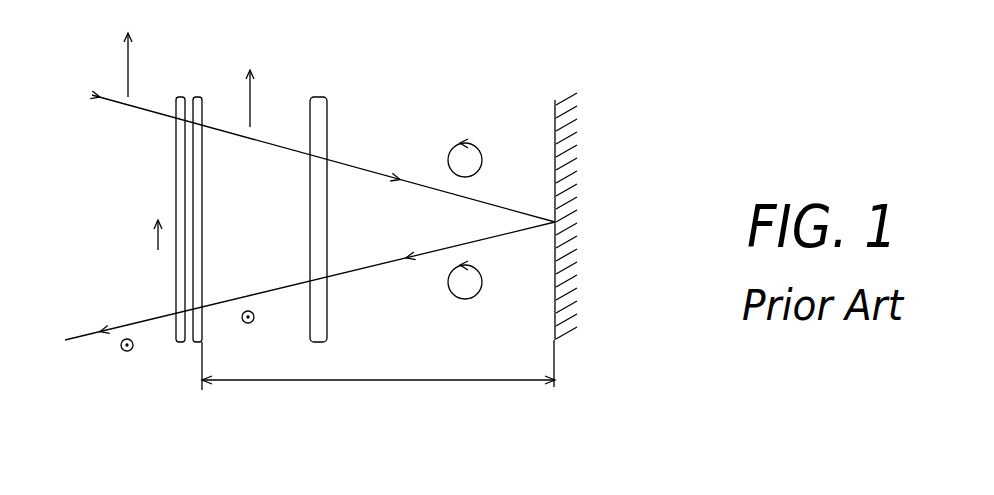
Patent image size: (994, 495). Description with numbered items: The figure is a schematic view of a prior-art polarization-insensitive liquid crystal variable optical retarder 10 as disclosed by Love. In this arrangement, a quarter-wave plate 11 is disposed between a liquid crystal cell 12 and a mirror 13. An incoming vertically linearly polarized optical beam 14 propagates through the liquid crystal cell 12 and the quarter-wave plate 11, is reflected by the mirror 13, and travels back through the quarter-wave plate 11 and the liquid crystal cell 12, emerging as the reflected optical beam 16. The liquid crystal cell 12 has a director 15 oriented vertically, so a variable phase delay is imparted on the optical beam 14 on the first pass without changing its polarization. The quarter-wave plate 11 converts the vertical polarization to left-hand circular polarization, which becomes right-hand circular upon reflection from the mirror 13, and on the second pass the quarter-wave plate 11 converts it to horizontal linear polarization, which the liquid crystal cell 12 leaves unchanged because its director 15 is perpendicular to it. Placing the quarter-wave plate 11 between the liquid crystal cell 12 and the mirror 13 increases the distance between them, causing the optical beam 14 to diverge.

The variable optical retarder 10 is at (565, 40).
The quarter-wave plate 11 is at (320, 97).
The liquid crystal cell 12 is at (183, 97).
The mirror 13 is at (560, 337).
The optical beam 14 is at (84, 100).
The director 15 is at (158, 250).
The reflected optical beam 16 is at (82, 338).